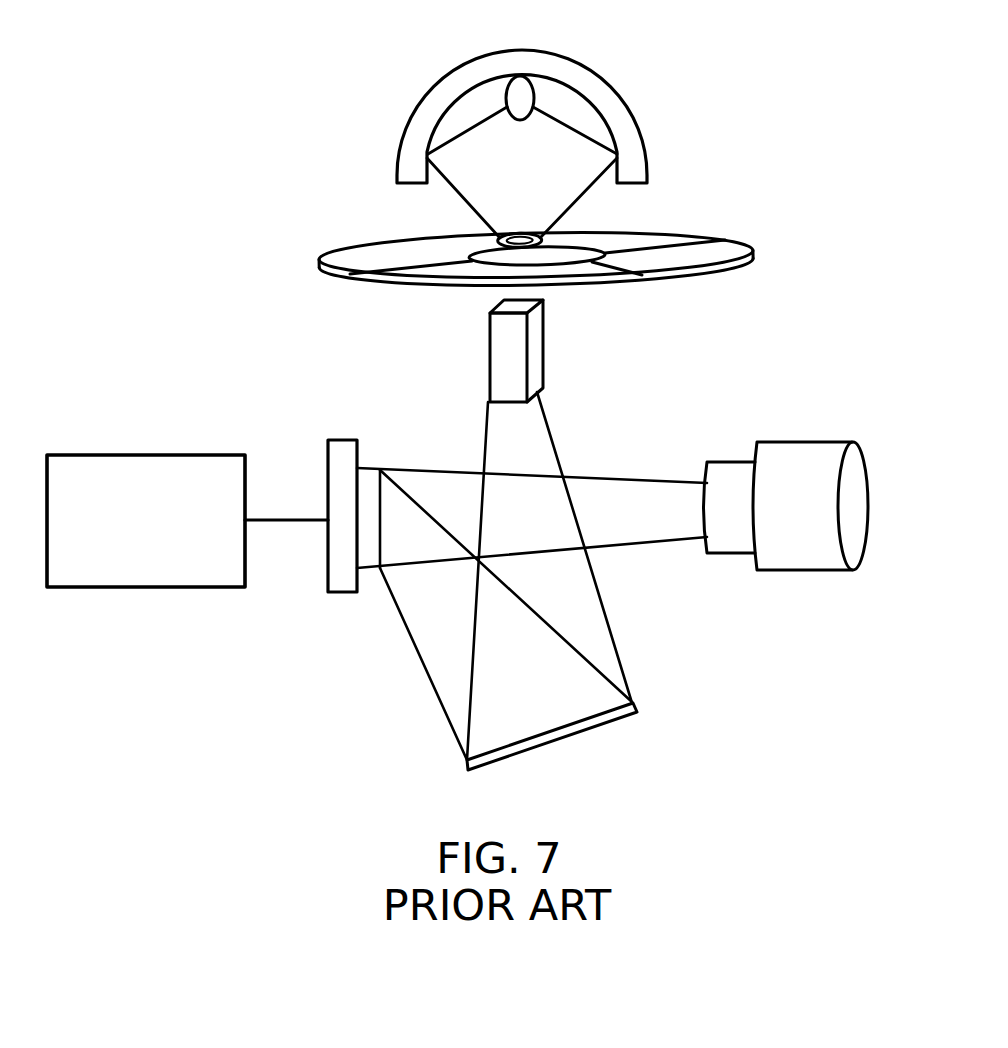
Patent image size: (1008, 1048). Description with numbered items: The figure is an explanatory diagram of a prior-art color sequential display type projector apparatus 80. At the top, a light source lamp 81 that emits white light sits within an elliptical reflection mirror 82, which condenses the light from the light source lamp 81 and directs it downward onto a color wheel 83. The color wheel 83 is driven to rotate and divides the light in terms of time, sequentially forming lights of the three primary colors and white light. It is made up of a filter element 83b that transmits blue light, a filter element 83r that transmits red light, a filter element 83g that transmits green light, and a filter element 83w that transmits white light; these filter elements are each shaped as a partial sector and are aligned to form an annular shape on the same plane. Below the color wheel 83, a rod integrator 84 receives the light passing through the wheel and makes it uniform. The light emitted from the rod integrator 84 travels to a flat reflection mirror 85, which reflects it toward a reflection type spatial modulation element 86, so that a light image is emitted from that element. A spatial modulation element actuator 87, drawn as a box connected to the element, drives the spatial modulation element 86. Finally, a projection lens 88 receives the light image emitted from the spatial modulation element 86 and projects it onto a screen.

The projector apparatus 80 is at (228, 195).
The light source lamp 81 is at (525, 93).
The elliptical reflection mirror 82 is at (650, 168).
The color wheel 83 is at (790, 246).
The filter element 83g is at (383, 243).
The filter element 83w is at (661, 230).
The filter element 83b is at (700, 264).
The filter element 83r is at (428, 282).
The rod integrator 84 is at (543, 350).
The flat reflection mirror 85 is at (636, 714).
The reflection type spatial modulation element 86 is at (333, 593).
The spatial modulation element actuator 87 is at (93, 588).
The projection lens 88 is at (790, 556).